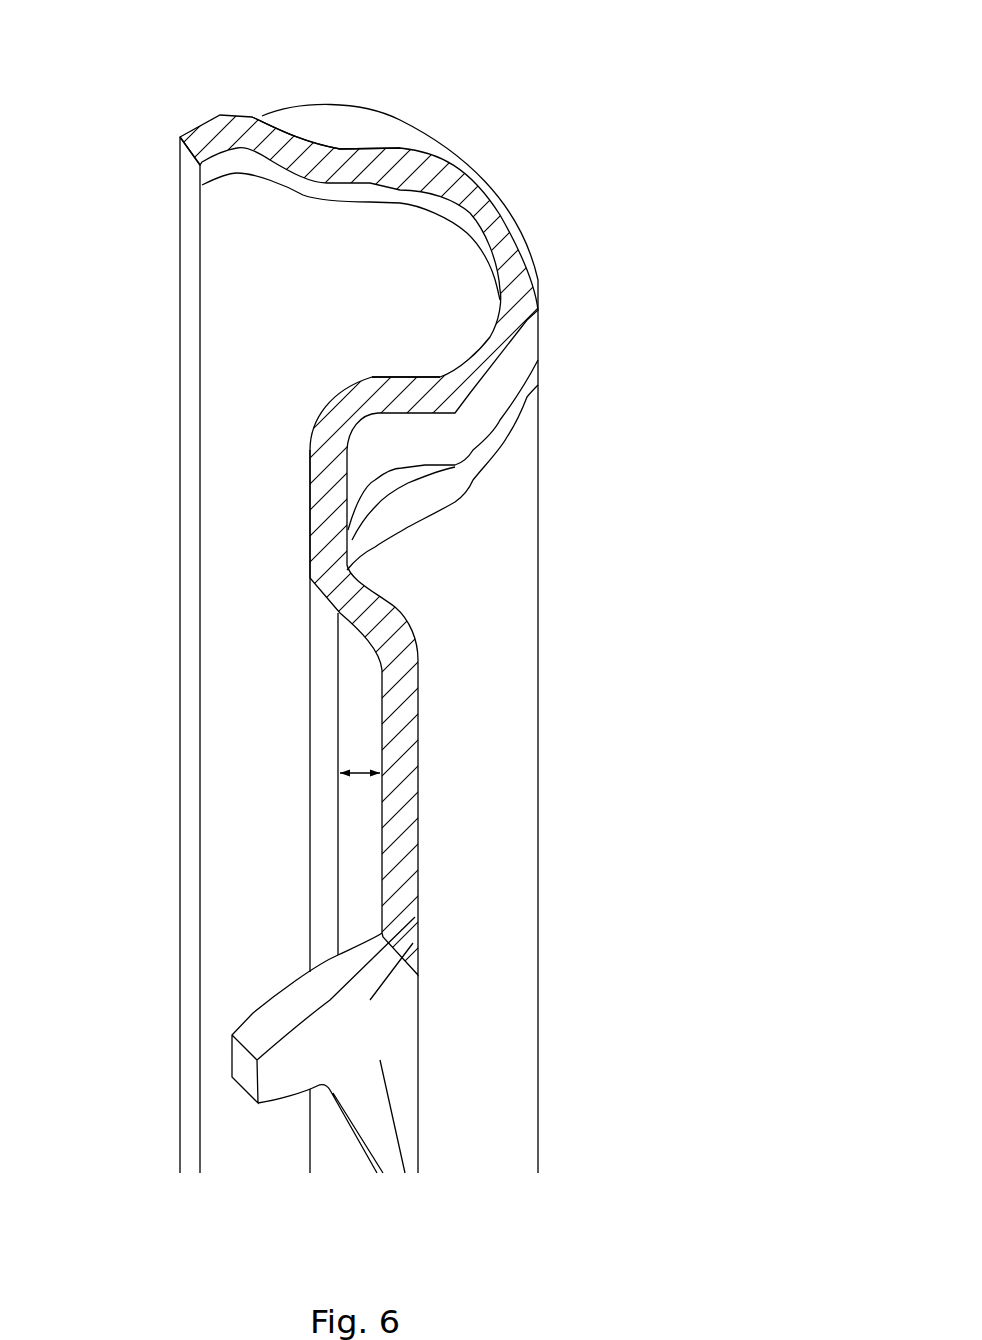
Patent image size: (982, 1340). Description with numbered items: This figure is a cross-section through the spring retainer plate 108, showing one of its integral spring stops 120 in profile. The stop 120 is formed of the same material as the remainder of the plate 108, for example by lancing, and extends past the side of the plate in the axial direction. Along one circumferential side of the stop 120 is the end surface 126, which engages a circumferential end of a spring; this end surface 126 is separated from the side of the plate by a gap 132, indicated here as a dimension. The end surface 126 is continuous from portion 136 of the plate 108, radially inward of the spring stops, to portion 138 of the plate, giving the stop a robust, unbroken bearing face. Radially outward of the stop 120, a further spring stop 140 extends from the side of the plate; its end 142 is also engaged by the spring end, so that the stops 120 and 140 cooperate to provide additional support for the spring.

The spring retainer plate 108 is at (607, 63).
The spring stop 120 is at (285, 500).
The end surface 126 is at (328, 497).
The gap 132 is at (365, 767).
The portion 136 is at (417, 912).
The portion 138 is at (418, 377).
The spring stop 140 is at (345, 135).
The end 142 is at (302, 165).